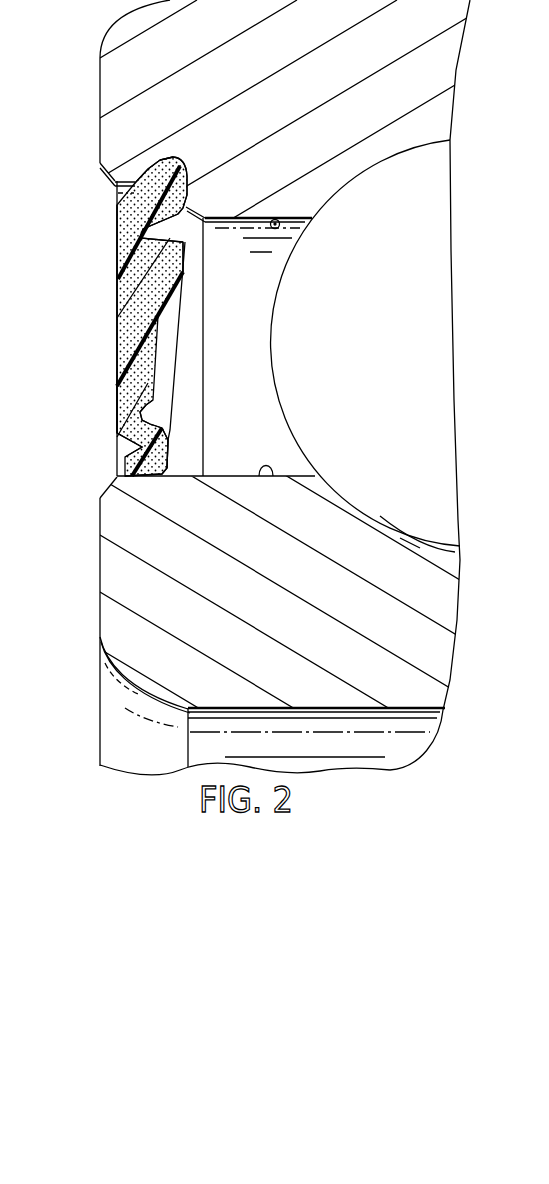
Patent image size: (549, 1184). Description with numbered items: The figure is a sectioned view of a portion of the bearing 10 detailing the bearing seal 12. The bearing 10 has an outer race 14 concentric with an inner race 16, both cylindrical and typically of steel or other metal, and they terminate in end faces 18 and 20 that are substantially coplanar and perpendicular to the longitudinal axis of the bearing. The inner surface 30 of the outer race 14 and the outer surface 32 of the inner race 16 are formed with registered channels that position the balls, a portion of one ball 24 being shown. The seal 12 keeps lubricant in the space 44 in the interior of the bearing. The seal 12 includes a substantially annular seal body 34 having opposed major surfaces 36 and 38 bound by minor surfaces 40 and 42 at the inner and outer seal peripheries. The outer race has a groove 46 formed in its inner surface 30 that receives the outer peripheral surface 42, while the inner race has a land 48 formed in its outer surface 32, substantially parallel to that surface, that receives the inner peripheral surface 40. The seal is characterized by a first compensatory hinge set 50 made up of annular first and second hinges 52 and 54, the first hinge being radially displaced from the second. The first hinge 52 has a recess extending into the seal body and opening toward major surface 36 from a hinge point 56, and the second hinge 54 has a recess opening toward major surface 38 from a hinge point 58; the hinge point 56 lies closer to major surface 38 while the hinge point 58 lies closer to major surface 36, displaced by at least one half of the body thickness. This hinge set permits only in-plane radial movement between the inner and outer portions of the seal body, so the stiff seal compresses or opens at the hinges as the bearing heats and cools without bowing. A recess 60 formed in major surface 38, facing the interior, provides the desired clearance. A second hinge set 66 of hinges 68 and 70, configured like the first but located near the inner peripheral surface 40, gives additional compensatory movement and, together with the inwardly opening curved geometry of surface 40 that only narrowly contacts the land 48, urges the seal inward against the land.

The bearing 10 is at (76, 655).
The bearing seal 12 is at (108, 290).
The outer race 14 is at (432, 70).
The inner race 16 is at (437, 598).
The end face 18 is at (100, 573).
The end face 20 is at (100, 97).
The ball 24 is at (420, 203).
The inner surface 30 is at (273, 219).
The outer surface 32 is at (262, 476).
The seal body 34 is at (143, 312).
The first major surface 36 is at (117, 336).
The second major surface 38 is at (185, 283).
The inner peripheral surface 40 is at (142, 478).
The outer peripheral surface 42 is at (162, 172).
The space 44 is at (240, 388).
The groove 46 is at (170, 155).
The land 48 is at (166, 471).
The first compensatory hinge set 50 is at (100, 202).
The first hinge 52 is at (186, 205).
The second hinge 54 is at (178, 228).
The hinge point 56 is at (182, 166).
The hinge point 58 is at (140, 232).
The recess 60 is at (165, 361).
The second hinge set 66 is at (106, 428).
The hinge 68 is at (148, 425).
The hinge 70 is at (135, 452).